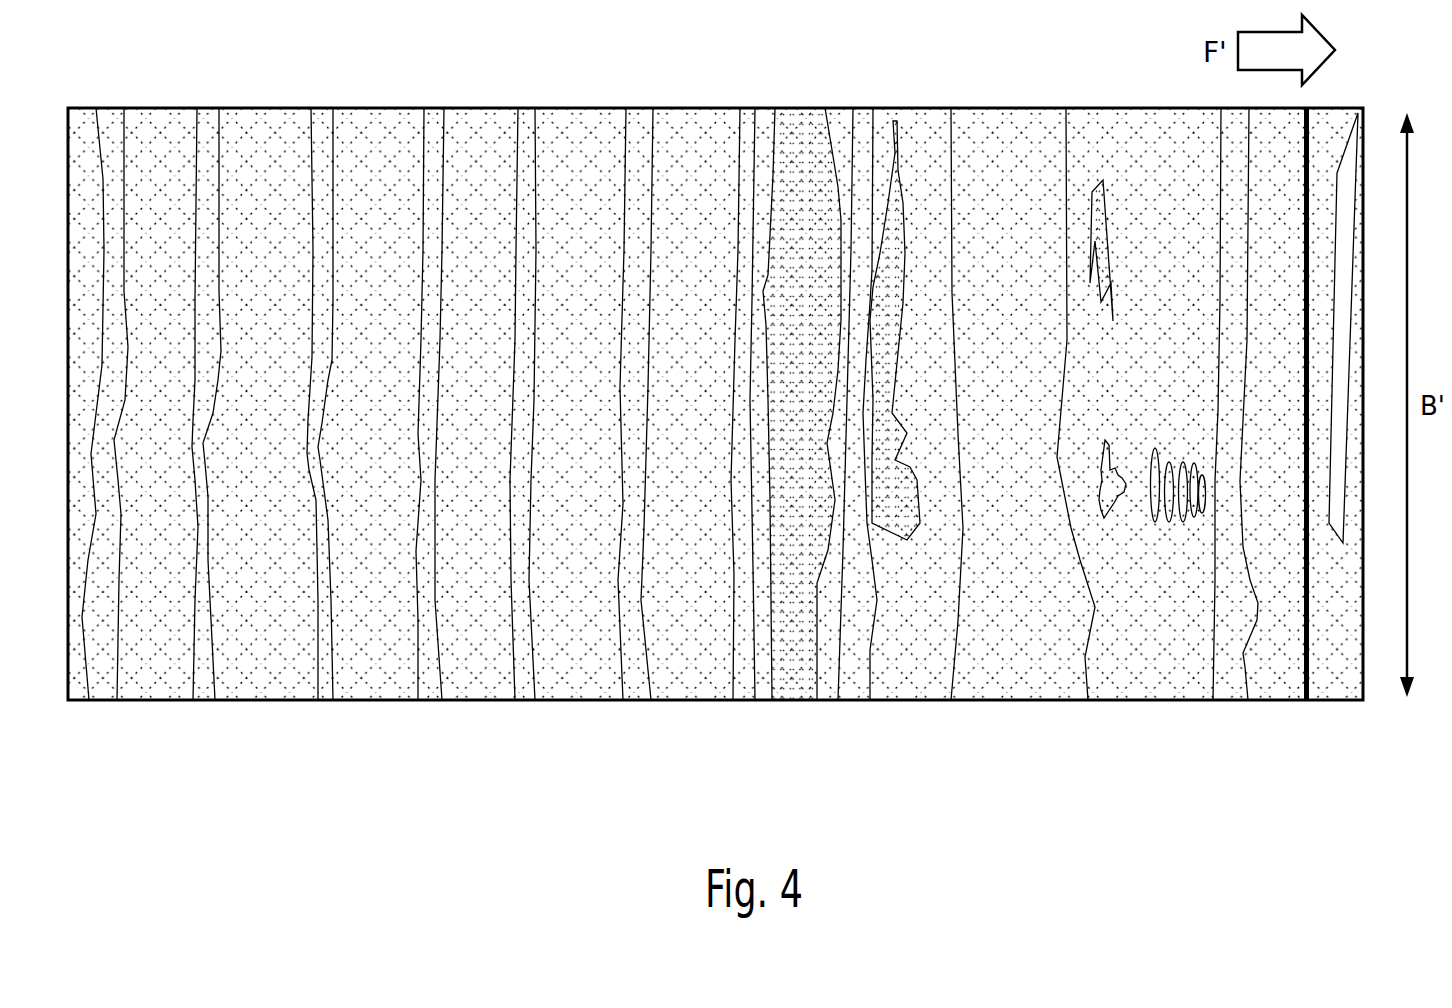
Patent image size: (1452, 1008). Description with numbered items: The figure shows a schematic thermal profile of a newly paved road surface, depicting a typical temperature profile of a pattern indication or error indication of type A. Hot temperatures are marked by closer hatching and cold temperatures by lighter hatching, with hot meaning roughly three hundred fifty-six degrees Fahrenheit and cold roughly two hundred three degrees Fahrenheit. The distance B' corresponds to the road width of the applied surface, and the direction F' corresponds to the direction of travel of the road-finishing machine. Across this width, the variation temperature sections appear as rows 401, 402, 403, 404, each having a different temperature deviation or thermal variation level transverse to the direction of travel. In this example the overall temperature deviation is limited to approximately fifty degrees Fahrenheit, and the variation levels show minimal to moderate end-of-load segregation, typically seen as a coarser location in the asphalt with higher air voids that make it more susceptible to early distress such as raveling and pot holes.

The variation temperature section 401 is at (897, 680).
The variation temperature section 402 is at (797, 680).
The variation temperature section 403 is at (380, 680).
The variation temperature section 404 is at (318, 680).